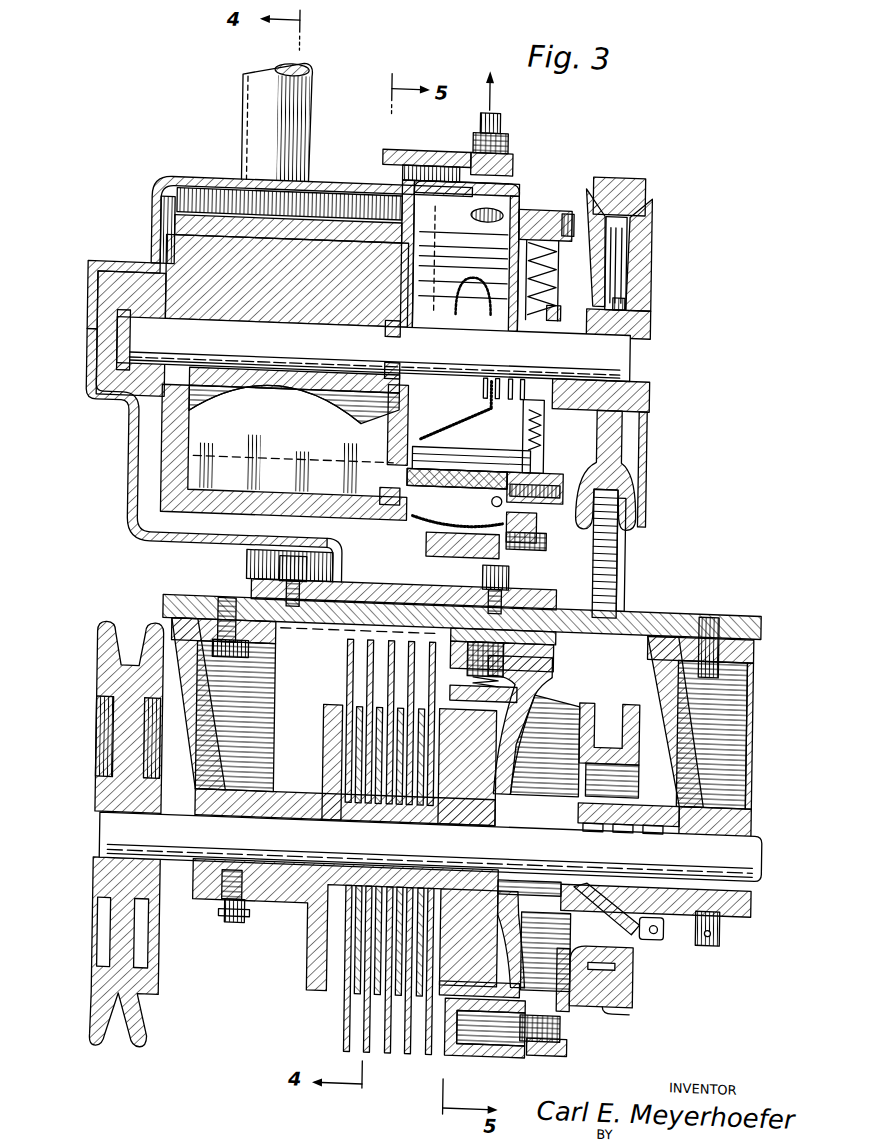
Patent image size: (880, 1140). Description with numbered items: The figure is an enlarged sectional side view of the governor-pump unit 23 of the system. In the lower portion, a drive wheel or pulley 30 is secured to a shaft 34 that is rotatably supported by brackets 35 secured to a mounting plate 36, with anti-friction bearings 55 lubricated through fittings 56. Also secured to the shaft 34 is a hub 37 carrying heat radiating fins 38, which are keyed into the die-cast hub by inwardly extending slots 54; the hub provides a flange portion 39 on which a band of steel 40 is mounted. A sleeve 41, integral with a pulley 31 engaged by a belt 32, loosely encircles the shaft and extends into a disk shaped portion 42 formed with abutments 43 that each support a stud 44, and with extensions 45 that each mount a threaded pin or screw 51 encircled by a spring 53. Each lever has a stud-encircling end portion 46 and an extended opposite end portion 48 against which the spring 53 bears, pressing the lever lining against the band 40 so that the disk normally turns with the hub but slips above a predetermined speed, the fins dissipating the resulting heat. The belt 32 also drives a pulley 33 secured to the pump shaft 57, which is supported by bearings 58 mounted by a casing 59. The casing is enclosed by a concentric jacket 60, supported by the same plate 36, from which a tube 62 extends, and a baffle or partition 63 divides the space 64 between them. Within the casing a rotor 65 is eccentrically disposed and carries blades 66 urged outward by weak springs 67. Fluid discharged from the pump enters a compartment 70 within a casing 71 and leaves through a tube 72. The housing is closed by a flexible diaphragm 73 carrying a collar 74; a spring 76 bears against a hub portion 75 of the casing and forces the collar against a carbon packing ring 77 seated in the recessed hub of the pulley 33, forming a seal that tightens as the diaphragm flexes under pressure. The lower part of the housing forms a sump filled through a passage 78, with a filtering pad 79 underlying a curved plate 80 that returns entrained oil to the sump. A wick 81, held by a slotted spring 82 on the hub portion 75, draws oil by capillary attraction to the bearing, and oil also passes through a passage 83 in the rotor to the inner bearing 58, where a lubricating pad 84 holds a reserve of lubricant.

The drive shaft assembly 23 is at (662, 472).
The drive wheel or pulley 30 is at (108, 698).
The pulley 31 is at (645, 965).
The belt 32 is at (622, 991).
The pulley 33 is at (622, 440).
The shaft 34 is at (107, 826).
The brackets 35 is at (773, 662).
The mounting plate 36 is at (740, 598).
The hub 37 is at (318, 898).
The heat radiating fins 38 is at (352, 994).
The mounting surface or flange portion 39 is at (436, 1044).
The band of steel 40 is at (521, 983).
The sleeve 41 is at (653, 790).
The disk shaped portion 42 is at (596, 700).
The abutments 43 is at (572, 1048).
The stud 44 is at (570, 1013).
The extensions 45 is at (462, 675).
The stud-encircling end portion 46 is at (470, 1044).
The extended opposite end portion 48 is at (575, 645).
The threaded pin or screw 51 is at (502, 630).
The spring 53 is at (508, 653).
The inwardly extending slots 54 is at (352, 1020).
The anti-friction bearings 55 is at (219, 900).
The fittings 56 is at (245, 918).
The shaft 57 is at (617, 340).
The bearings 58 is at (153, 318).
The casing 59 is at (125, 381).
The jacket 60 is at (130, 501).
The tube 62 is at (248, 90).
The baffle or partition 63 is at (183, 175).
The space 64 is at (150, 466).
The rotor 65 is at (200, 238).
The blade 66 is at (293, 457).
The spring 67 is at (312, 410).
The compartment 70 is at (507, 158).
The casing 71 is at (528, 183).
The tube 72 is at (497, 108).
The flexible diaphragm 73 is at (600, 248).
The collar 74 is at (590, 398).
The hub portion 75 is at (464, 261).
The spring 76 is at (503, 382).
The packing ring 77 is at (600, 317).
The passage 78 is at (520, 497).
The filtering pad 79 is at (470, 458).
The curved plate 80 is at (494, 489).
The wick 81 is at (440, 425).
The slotted spring 82 is at (493, 405).
The passage 83 is at (251, 315).
The lubricating pad 84 is at (118, 262).